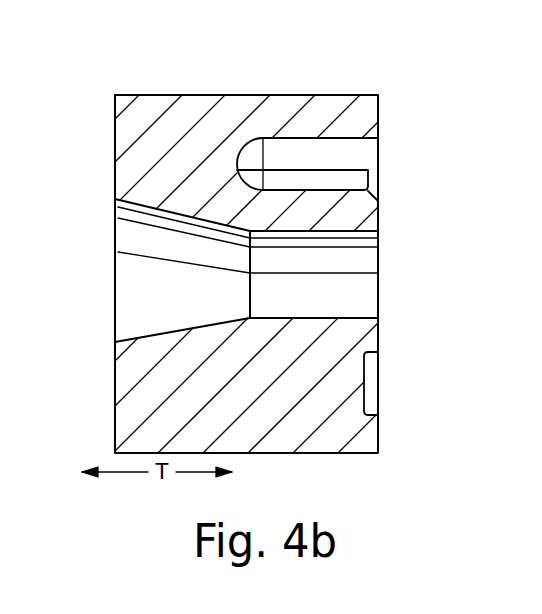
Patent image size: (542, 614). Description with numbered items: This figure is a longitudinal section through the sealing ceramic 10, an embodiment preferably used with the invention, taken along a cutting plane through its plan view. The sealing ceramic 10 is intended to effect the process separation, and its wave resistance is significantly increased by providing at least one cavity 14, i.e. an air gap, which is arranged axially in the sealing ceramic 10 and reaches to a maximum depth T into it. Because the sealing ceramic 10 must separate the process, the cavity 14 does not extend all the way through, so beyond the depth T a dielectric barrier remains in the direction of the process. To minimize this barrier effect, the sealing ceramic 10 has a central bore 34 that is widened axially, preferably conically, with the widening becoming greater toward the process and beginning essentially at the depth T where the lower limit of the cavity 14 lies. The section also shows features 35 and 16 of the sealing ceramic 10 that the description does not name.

The sealing ceramic 10 is at (189, 118).
The cavity 14 is at (338, 158).
The tapered inlet portion 35 is at (143, 238).
The bore / through opening 16 is at (143, 318).
The central bore 34 is at (352, 318).